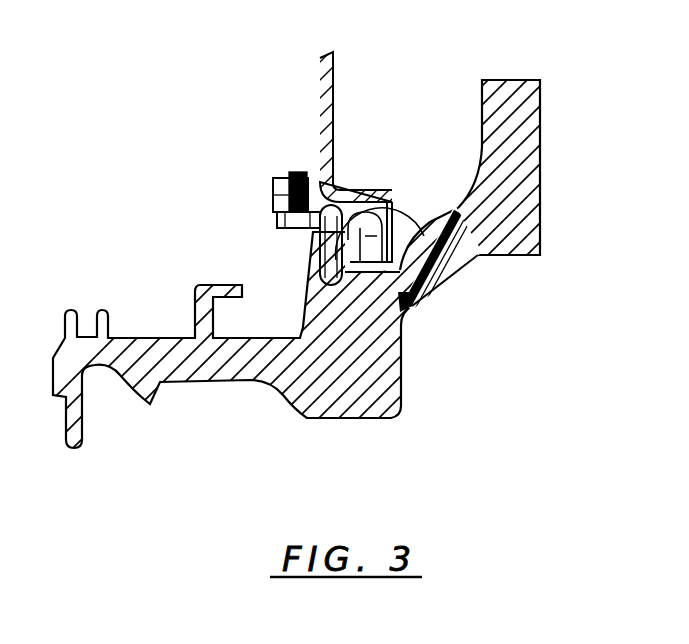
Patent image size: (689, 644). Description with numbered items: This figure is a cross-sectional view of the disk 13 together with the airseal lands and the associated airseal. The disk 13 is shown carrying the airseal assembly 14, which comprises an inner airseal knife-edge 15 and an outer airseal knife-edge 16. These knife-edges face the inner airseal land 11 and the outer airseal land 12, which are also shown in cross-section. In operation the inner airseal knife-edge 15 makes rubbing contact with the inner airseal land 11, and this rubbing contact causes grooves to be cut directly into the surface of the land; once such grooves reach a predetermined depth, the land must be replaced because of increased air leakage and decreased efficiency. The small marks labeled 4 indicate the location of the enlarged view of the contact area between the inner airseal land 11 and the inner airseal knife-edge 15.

The section line 4 is at (356, 278).
The inner airseal land 11 is at (436, 232).
The outer airseal land 12 is at (312, 272).
The disk 13 is at (482, 122).
The airseal assembly 14 is at (320, 73).
The inner airseal knife-edge 15 is at (400, 208).
The outer airseal knife-edge 16 is at (292, 235).